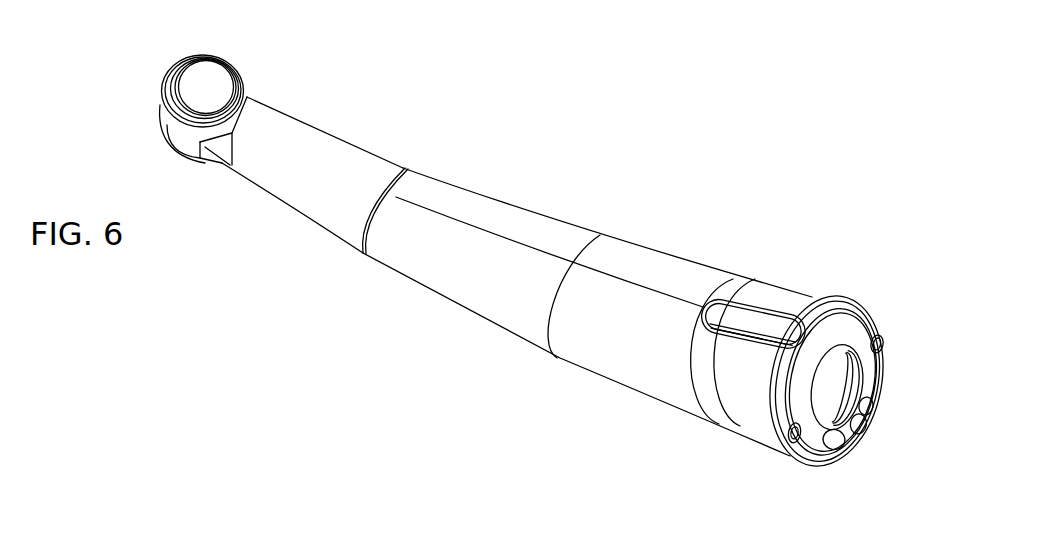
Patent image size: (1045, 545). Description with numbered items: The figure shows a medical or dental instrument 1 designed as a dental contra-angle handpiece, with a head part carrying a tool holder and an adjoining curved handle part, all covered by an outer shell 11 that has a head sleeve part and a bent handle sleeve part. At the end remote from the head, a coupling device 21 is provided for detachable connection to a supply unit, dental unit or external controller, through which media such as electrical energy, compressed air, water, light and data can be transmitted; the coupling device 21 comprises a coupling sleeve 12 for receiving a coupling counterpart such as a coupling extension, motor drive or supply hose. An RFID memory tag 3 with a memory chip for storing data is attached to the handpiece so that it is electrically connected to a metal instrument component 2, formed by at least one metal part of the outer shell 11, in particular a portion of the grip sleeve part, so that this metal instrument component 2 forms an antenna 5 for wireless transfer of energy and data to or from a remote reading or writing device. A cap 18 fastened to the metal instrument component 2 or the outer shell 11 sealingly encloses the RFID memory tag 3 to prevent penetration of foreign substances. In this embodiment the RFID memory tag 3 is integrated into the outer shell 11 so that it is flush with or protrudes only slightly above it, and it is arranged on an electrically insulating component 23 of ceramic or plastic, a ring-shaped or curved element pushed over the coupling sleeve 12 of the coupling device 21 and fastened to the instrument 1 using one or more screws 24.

The medical or dental instrument 1 is at (530, 138).
The outer shell 11 is at (417, 132).
The metal instrument component 2 is at (668, 270).
The antenna 5 is at (555, 263).
The cap 18 is at (737, 313).
The RFID memory tag 3 is at (787, 305).
The coupling device 21 is at (895, 350).
The coupling sleeve 12 is at (838, 372).
The electrically insulating component 23 is at (738, 422).
The screws 24 is at (810, 443).